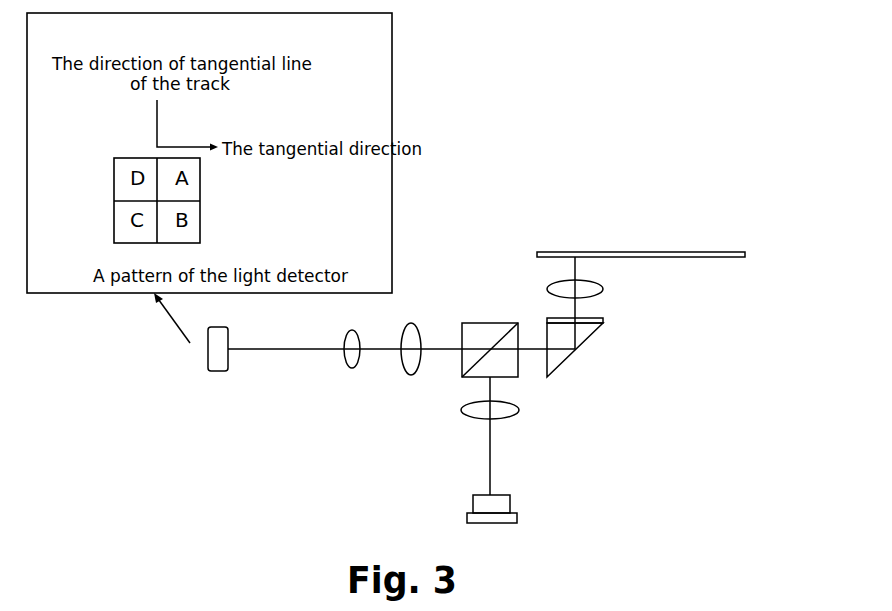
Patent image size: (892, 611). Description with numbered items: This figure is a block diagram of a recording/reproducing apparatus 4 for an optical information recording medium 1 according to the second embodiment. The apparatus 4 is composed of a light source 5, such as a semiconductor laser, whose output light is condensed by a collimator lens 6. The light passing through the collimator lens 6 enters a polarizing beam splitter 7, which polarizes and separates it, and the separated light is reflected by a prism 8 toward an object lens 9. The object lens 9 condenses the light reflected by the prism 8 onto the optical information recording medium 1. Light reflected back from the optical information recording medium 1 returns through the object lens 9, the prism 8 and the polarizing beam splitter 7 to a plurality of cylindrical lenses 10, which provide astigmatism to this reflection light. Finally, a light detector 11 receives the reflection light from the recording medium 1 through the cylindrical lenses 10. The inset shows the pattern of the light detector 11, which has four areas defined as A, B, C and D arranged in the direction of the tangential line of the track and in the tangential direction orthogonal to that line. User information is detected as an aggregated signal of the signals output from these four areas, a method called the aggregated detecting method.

The optical information recording medium 1 is at (733, 252).
The recording/reproducing apparatus 4 is at (717, 199).
The light source 5 is at (510, 506).
The collimator lens 6 is at (519, 410).
The polarizing beam splitter 7 is at (487, 320).
The prism 8 is at (592, 335).
The object lens 9 is at (603, 289).
The cylindrical lens 10 is at (408, 384).
The light detector 11 is at (212, 371).